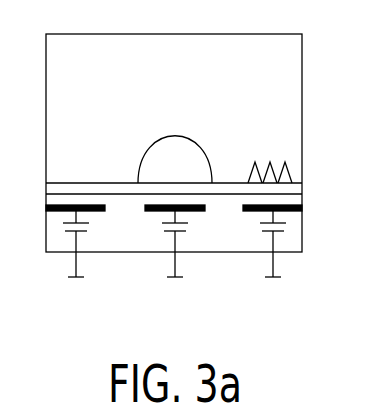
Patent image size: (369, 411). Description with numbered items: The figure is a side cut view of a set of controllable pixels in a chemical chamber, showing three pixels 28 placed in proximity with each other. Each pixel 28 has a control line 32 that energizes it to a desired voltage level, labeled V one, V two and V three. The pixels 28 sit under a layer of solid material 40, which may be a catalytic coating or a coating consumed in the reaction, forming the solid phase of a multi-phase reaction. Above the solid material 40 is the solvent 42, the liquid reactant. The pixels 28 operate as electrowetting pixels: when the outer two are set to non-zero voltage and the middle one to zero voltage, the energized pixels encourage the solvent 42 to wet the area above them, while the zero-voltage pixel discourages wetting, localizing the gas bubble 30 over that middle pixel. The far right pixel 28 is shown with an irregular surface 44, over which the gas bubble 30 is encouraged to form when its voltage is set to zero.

The solvent 42 is at (255, 58).
The solid material 40 is at (60, 189).
The gas bubble 30 is at (205, 149).
The irregular surface 44 is at (288, 173).
The pixel 28 is at (84, 242).
The control line 32 is at (73, 267).